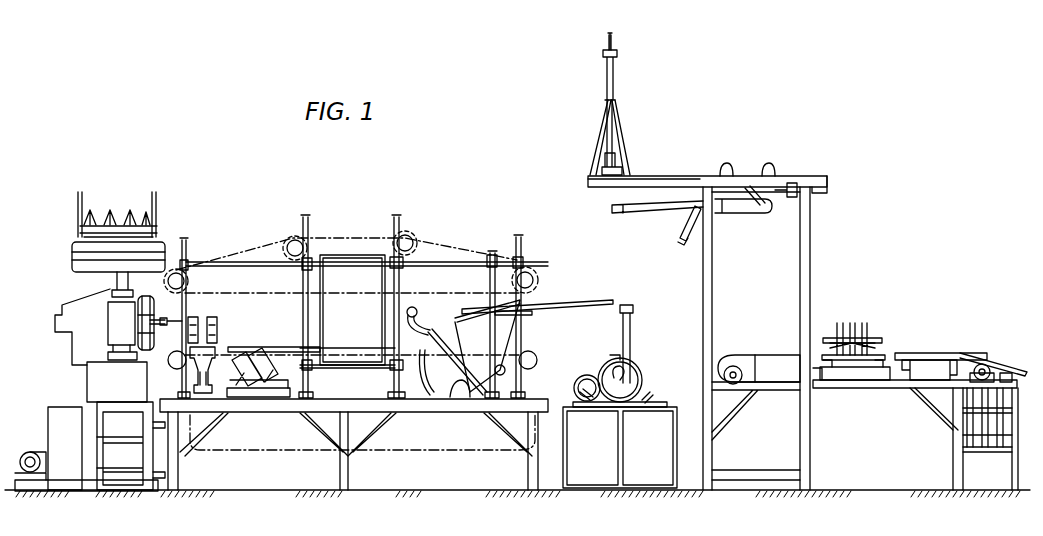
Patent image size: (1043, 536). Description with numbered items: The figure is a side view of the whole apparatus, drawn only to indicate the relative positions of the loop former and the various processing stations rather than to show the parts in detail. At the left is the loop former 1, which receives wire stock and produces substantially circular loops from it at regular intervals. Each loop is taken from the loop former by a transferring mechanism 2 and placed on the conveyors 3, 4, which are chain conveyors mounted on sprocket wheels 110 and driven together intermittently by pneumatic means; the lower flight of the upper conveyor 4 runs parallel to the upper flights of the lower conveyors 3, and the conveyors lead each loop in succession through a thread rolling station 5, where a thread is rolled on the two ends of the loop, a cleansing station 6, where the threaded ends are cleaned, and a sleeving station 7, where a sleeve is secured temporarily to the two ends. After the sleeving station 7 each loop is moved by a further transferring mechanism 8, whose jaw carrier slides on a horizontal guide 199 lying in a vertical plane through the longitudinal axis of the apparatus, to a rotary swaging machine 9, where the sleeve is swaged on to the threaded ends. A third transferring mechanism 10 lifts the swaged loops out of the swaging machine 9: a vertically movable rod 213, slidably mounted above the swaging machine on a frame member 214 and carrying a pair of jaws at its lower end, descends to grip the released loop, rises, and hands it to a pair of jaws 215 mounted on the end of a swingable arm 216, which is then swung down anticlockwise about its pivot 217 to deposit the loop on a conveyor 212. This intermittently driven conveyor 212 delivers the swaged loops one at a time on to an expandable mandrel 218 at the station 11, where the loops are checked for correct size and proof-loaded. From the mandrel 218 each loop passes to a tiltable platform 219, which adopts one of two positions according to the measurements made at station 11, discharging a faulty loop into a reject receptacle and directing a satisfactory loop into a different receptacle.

The loop former 1 is at (107, 323).
The transferring mechanism 2 is at (200, 318).
The conveyor 3 is at (290, 394).
The conveyor 4 is at (245, 252).
The thread rolling station 5 is at (255, 350).
The cleansing station 6 is at (347, 311).
The sleeving station 7 is at (436, 328).
The transferring mechanism 8 is at (508, 314).
The rotary swaging machine 9 is at (640, 366).
The transferring mechanism 10 is at (666, 103).
The proof-loading and size checking station 11 is at (864, 302).
The sprocket wheels 110 is at (186, 280).
The horizontal guide 199 is at (592, 292).
The conveyor 212 is at (763, 354).
The vertically movable rod 213 is at (615, 43).
The frame member 214 is at (677, 177).
The jaws 215 is at (612, 208).
The swingable arm 216 is at (648, 208).
The pivot 217 is at (763, 215).
The expandable mandrel 218 is at (883, 355).
The tiltable platform 219 is at (952, 353).